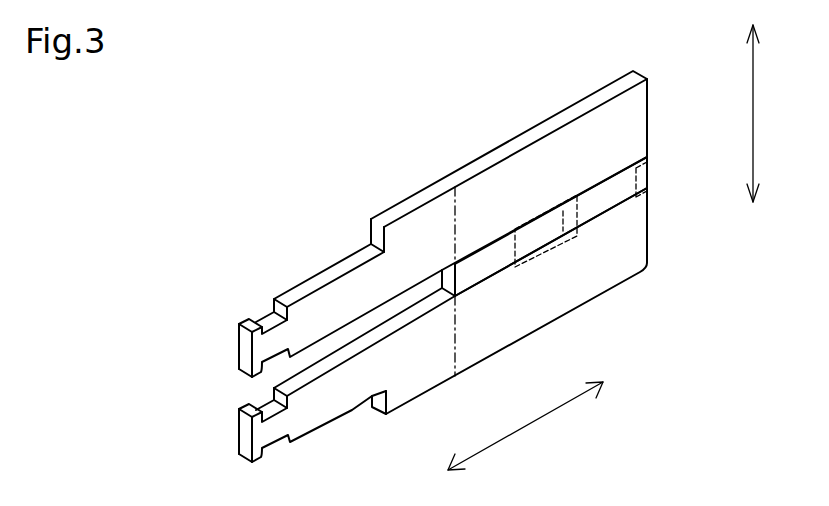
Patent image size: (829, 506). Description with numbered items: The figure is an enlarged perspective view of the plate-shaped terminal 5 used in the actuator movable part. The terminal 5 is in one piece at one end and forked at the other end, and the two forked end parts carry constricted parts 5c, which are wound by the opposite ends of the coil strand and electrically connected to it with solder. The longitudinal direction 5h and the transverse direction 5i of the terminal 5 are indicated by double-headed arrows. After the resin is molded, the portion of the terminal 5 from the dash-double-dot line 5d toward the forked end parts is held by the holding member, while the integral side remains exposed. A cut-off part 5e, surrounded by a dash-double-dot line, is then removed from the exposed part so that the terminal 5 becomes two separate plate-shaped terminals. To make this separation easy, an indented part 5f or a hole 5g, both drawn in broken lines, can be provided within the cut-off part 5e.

The plate-shaped terminal 5 is at (587, 130).
The constricted parts 5c is at (263, 407).
The dash-double-dot line 5d is at (448, 178).
The cut-off part 5e is at (607, 178).
The indented part 5f is at (648, 172).
The hole 5g is at (556, 237).
The longitudinal direction 5h is at (525, 426).
The transverse direction 5i is at (767, 113).